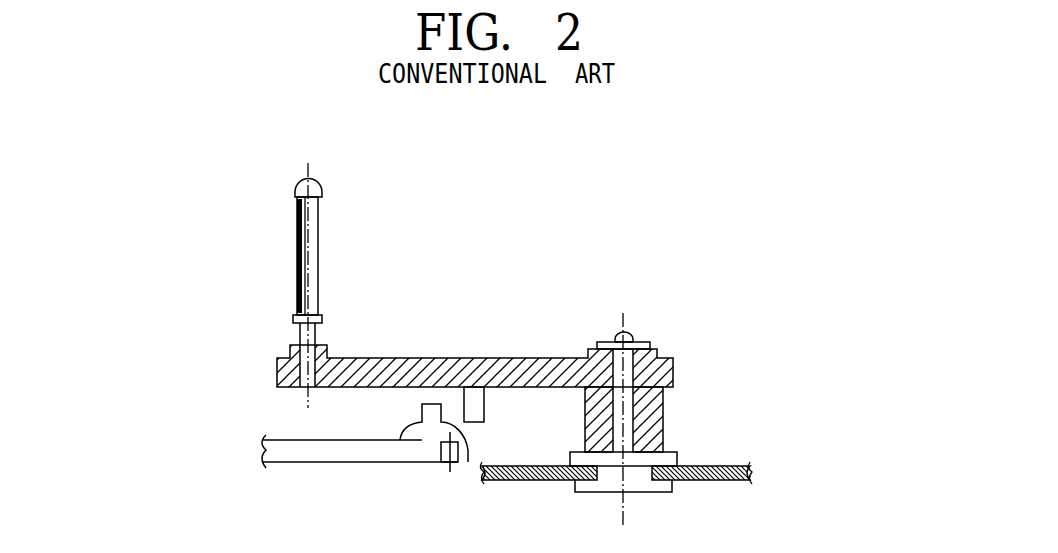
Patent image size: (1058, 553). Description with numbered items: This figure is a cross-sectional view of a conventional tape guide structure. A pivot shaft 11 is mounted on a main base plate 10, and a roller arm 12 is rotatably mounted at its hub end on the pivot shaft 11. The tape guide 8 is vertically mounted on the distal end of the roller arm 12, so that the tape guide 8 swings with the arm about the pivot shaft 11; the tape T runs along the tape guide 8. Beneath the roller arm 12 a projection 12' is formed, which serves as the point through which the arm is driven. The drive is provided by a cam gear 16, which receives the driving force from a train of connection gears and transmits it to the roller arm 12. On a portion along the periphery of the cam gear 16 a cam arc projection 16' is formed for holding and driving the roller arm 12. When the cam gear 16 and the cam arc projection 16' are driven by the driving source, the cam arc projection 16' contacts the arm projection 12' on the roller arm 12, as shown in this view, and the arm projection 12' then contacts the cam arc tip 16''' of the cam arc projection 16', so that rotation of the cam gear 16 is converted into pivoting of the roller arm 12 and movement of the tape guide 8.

The tape T is at (297, 242).
The tape guide 8 is at (317, 267).
The roller arm 12 is at (475, 345).
The projection 12' is at (497, 362).
The pivot shaft 11 is at (620, 362).
The main base plate 10 is at (718, 467).
The cam gear 16 is at (360, 484).
The cam arc projection 16' is at (425, 468).
The cam arc tip 16''' is at (468, 482).